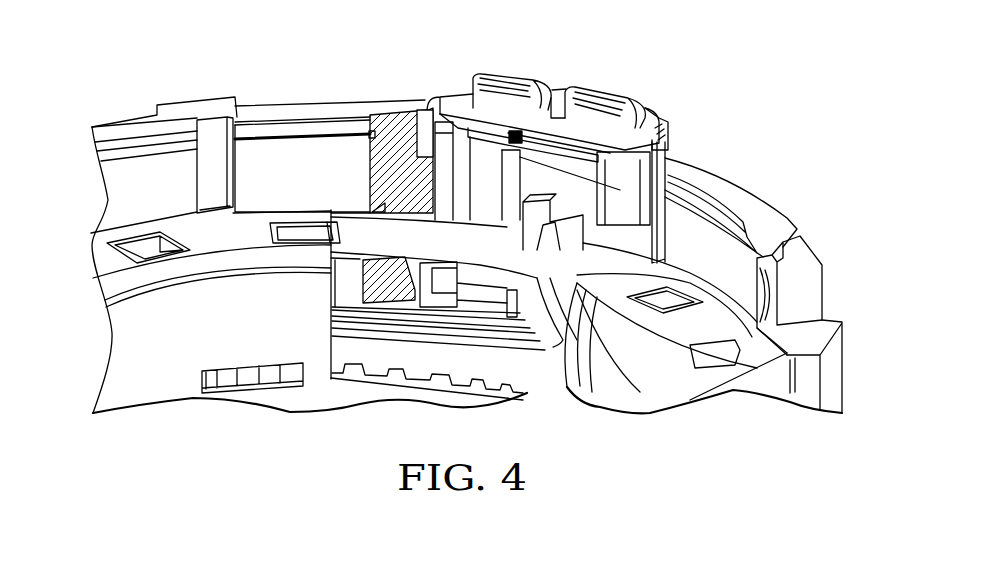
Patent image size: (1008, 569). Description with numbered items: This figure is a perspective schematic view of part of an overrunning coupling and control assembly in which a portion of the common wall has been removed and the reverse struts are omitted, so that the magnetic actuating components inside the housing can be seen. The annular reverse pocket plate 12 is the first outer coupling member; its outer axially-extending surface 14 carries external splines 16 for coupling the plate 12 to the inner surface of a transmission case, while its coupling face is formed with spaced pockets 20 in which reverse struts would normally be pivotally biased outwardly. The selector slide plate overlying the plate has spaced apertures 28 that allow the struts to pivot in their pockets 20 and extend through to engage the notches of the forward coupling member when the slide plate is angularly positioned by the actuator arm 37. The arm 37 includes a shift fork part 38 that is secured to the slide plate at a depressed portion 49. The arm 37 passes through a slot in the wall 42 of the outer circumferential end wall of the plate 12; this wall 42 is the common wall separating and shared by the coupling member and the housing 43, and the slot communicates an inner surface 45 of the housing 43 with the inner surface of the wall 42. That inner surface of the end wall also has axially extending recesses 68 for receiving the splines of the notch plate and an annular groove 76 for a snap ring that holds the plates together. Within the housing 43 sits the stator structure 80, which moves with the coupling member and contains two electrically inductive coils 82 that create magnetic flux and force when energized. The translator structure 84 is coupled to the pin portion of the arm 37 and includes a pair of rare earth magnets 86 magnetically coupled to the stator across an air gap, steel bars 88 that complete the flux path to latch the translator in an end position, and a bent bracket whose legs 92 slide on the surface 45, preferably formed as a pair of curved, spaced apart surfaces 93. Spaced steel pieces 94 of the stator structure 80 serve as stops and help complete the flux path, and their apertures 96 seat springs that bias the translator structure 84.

The reverse pocket plate 12 is at (293, 102).
The outer axially-extending surface 14 is at (757, 392).
The external splines 16 is at (200, 97).
The pockets 20 is at (152, 253).
The apertures 28 is at (158, 236).
The actuator arm 37 is at (549, 252).
The shift fork part 38 is at (507, 228).
The wall 42 is at (683, 237).
The housing 43 is at (453, 93).
The inner surface 45 is at (506, 112).
The depressed portion 49 is at (547, 296).
The axially extending recesses 68 is at (214, 142).
The annular groove 76 is at (352, 133).
The stator structure 80 is at (607, 55).
The electrically inductive coils 82 is at (525, 80).
The translator structure 84 is at (618, 203).
The rare earth magnets 86 is at (661, 126).
The steel bars 88 is at (514, 197).
The legs 92 is at (507, 305).
The curved, spaced apart surfaces 93 is at (480, 302).
The steel pieces 94 is at (445, 147).
The apertures 96 is at (463, 195).